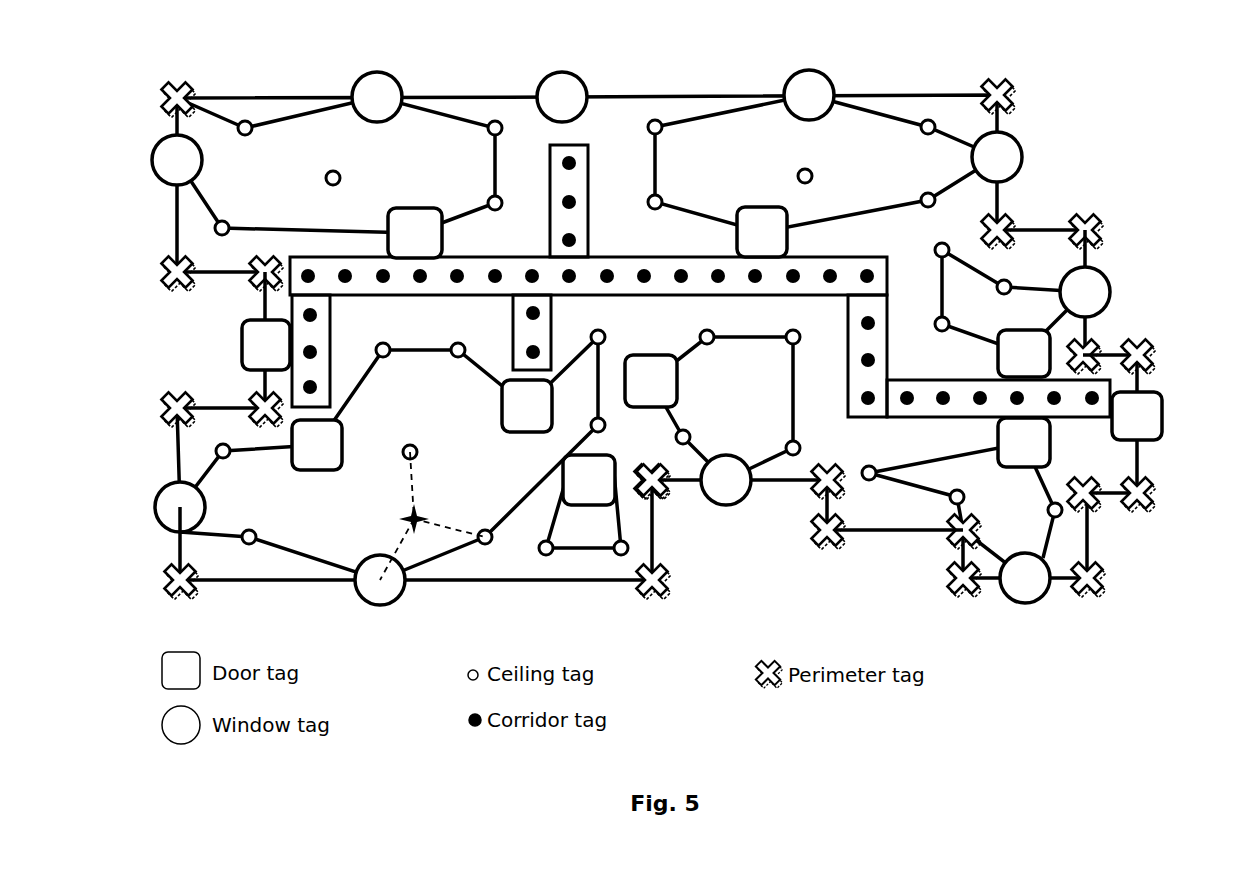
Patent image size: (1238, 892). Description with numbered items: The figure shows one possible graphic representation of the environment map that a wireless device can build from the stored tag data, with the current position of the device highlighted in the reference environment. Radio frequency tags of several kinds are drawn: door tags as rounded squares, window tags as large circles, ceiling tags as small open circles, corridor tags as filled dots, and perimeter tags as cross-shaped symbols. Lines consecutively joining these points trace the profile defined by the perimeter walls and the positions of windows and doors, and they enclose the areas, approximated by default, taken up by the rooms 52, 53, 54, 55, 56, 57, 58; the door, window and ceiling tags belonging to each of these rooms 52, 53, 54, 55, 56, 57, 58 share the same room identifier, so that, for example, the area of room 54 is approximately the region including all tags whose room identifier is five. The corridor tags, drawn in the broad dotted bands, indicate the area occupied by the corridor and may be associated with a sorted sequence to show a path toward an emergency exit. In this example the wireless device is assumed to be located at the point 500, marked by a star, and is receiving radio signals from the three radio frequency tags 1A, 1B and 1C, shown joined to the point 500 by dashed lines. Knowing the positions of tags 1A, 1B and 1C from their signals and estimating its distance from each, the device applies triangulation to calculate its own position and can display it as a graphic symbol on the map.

The room 52 is at (824, 141).
The room 53 is at (357, 162).
The room 54 is at (1013, 468).
The room 55 is at (794, 444).
The room 56 is at (619, 505).
The room 57 is at (417, 548).
The room 58 is at (1022, 285).
The point 500 is at (432, 554).
The radio frequency tag 1A is at (412, 440).
The radio frequency tag 1B is at (380, 580).
The radio frequency tag 1C is at (500, 540).